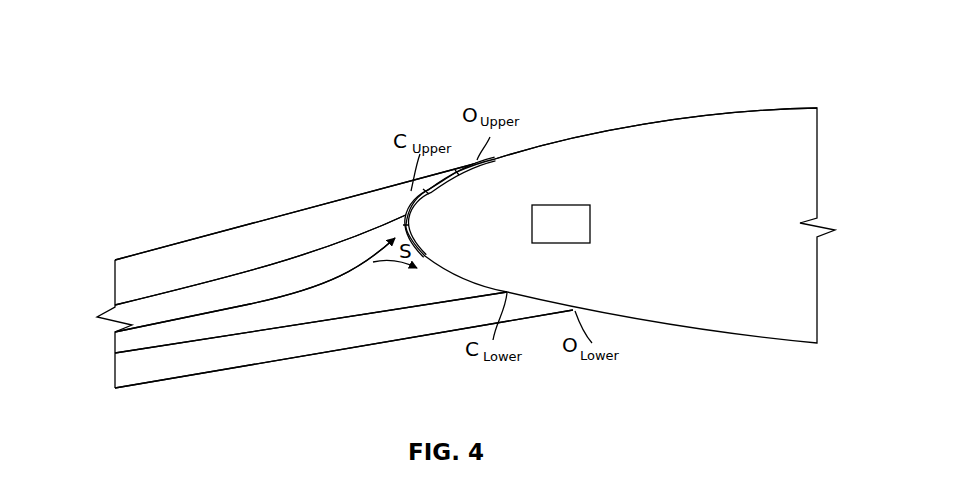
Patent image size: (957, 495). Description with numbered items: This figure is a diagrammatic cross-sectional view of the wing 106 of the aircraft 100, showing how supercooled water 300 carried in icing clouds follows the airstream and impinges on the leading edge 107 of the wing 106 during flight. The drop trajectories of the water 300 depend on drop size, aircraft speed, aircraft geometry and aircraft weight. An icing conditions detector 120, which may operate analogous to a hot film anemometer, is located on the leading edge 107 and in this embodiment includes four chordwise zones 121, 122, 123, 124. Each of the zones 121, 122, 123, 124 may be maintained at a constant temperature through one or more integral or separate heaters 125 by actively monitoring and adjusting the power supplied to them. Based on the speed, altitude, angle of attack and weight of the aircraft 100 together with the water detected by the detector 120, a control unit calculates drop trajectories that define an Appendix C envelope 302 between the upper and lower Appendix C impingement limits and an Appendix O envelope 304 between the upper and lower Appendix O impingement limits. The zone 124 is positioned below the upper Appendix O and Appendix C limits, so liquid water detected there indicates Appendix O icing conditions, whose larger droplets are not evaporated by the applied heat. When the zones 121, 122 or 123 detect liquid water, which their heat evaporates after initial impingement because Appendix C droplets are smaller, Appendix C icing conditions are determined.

The aircraft 100 is at (714, 78).
The wing 106 is at (575, 133).
The leading edge 107 is at (402, 226).
The icing conditions detector 120 is at (391, 174).
The chordwise zone 121 is at (418, 238).
The chordwise zone 122 is at (417, 207).
The chordwise zone 123 is at (447, 185).
The chordwise zone 124 is at (480, 165).
The heater 125 is at (580, 237).
The supercooled water 300 is at (160, 325).
The Appendix C envelope 302 is at (267, 264).
The Appendix O envelope 304 is at (158, 247).